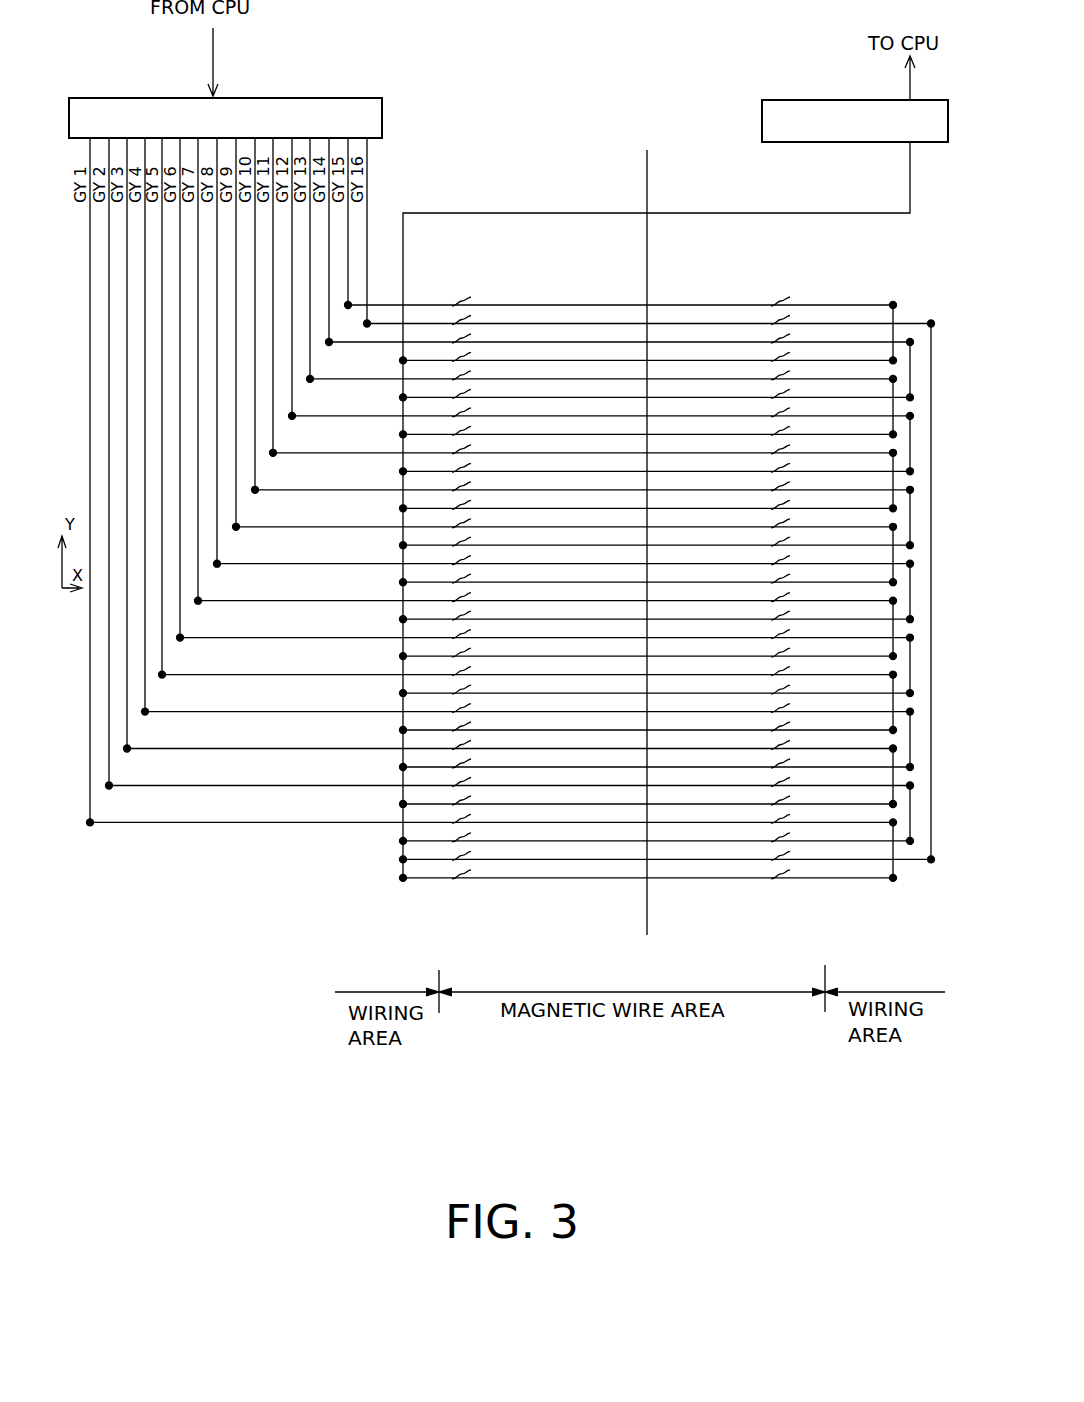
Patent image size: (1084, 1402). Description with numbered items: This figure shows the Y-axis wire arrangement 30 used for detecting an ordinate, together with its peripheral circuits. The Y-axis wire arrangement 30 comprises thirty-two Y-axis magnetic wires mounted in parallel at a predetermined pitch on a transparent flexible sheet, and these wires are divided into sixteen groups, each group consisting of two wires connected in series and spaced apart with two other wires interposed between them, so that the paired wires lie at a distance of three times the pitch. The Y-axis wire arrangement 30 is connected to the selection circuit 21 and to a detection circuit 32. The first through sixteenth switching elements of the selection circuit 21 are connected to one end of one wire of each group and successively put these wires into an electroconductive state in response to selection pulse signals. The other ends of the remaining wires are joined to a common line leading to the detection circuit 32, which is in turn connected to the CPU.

The selection circuit 21 is at (337, 98).
The detection circuit 32 is at (795, 100).
The Y-axis wire arrangement 30 is at (580, 305).